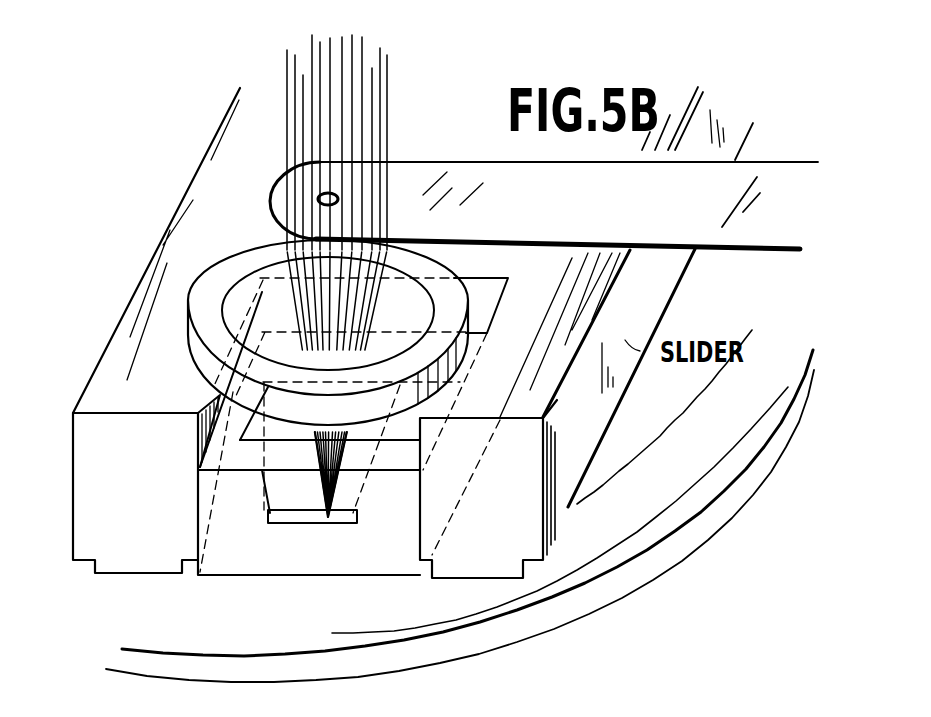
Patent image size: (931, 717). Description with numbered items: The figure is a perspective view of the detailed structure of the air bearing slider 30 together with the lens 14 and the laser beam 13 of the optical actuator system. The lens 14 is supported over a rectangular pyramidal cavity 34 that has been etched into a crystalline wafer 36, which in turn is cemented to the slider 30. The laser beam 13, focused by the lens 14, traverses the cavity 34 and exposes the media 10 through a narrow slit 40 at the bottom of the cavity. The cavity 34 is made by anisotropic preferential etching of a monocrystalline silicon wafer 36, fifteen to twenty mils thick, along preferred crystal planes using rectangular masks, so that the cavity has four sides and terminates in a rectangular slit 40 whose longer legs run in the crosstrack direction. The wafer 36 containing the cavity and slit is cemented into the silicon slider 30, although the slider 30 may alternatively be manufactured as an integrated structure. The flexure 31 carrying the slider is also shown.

The media 10 is at (478, 633).
The laser beam 13 is at (388, 121).
The lens 14 is at (263, 272).
The air bearing slider 30 is at (207, 192).
The flexure 31 is at (760, 236).
The rectangular pyramidal cavity 34 is at (262, 457).
The crystalline wafer 36 is at (233, 563).
The narrow slit 40 is at (300, 523).